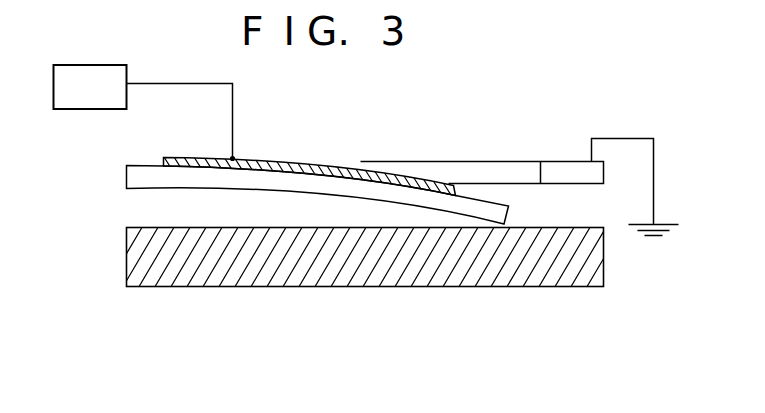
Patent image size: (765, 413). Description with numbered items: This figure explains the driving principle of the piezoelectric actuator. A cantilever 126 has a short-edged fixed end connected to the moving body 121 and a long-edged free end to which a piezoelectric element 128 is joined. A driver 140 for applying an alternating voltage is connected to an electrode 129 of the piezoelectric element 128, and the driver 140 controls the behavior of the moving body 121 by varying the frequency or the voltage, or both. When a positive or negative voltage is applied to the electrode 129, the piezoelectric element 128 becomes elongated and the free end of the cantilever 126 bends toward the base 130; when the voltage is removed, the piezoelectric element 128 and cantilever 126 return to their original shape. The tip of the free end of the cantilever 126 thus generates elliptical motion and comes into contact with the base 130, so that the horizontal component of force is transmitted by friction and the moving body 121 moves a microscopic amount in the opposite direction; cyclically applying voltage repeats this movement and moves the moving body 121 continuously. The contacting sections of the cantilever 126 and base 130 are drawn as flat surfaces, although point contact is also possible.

The driver 140 is at (145, 113).
The piezoelectric element 128 is at (372, 162).
The electrode 129 is at (236, 153).
The cantilever 126 is at (468, 210).
The moving body 121 is at (562, 170).
The base 130 is at (126, 260).